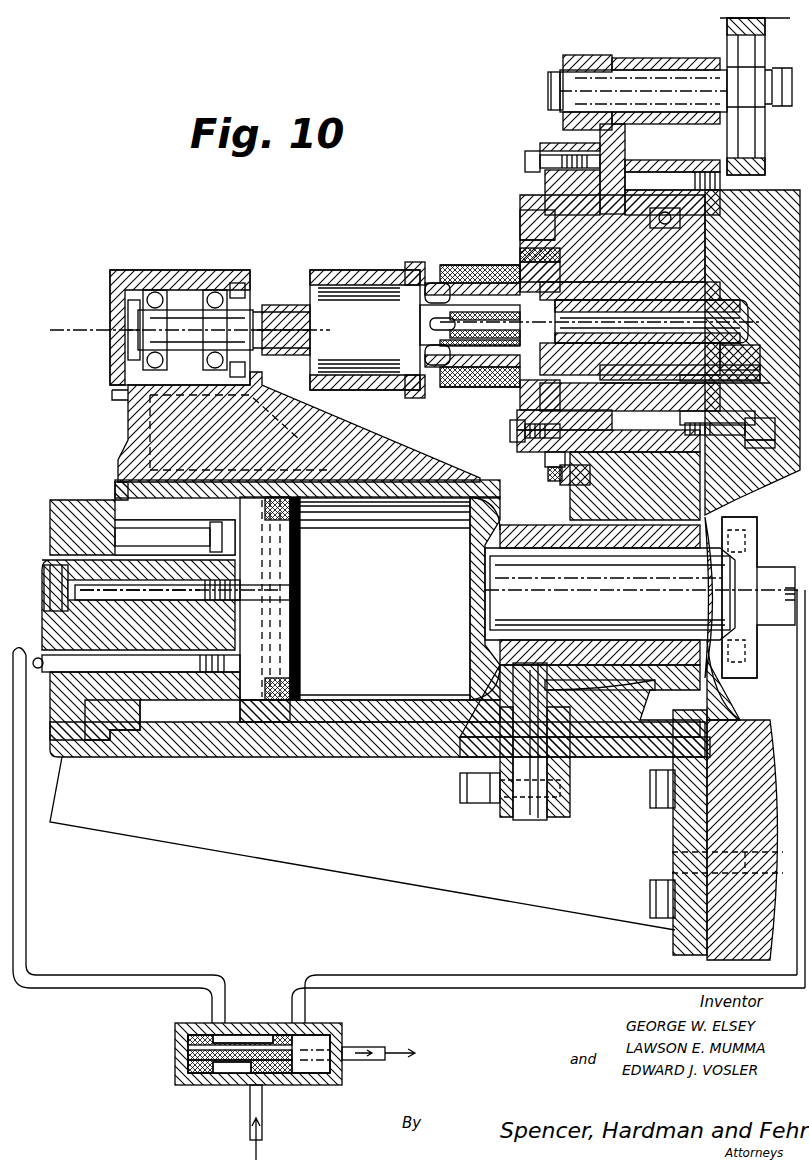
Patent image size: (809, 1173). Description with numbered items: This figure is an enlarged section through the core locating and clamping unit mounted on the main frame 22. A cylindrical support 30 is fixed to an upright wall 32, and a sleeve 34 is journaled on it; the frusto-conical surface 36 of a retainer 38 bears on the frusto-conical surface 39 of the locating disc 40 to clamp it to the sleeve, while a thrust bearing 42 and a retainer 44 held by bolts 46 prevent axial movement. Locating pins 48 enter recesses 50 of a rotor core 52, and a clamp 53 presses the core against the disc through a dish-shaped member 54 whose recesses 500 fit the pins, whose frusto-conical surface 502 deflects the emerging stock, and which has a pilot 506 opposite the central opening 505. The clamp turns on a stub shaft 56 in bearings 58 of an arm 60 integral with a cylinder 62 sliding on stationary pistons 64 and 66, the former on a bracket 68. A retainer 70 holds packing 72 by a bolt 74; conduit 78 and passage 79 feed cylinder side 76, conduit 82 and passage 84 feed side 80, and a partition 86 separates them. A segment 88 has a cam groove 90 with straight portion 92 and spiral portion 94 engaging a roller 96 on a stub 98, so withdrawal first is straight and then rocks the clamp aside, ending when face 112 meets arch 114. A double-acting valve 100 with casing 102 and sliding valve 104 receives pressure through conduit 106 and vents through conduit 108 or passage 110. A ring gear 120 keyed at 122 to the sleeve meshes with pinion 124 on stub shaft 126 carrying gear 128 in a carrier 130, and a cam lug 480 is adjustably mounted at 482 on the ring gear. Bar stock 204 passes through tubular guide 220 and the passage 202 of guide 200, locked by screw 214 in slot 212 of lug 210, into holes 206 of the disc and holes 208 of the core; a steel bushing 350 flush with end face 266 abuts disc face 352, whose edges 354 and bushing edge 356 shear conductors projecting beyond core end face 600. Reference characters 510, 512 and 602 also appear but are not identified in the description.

The main frame 22 is at (712, 947).
The cylindrical support 30 is at (700, 290).
The upright wall 32 is at (760, 485).
The sleeve 34 is at (520, 219).
The frusto-conical surface 36 is at (510, 427).
The retainer 38 is at (517, 454).
The frusto-conical surface 39 is at (517, 410).
The locating disc 40 is at (520, 240).
The thrust bearing 42 is at (680, 216).
The retainer 44 is at (630, 124).
The bolts 46 is at (652, 172).
The locating pins 48 is at (440, 283).
The longitudinal recess 50 is at (458, 265).
The rotor core 52 is at (472, 395).
The clamp 53 is at (358, 272).
The dish-shaped member 54 is at (420, 392).
The stub shaft 56 is at (185, 310).
The combined thrust and journal bearings 58 is at (150, 292).
The extending arm 60 is at (130, 412).
The cylinder 62 is at (400, 440).
The stationary piston 64 is at (118, 490).
The stationary piston 66 is at (532, 560).
The bracket 68 is at (217, 757).
The retainer 70 is at (298, 594).
The packing 72 is at (290, 520).
The bolt 74 is at (68, 598).
The cylinder side 76 is at (345, 722).
The conduit 78 is at (142, 672).
The passage 79 is at (290, 690).
The cylinder side 80 is at (470, 628).
The conduit 82 is at (800, 685).
The passage 84 is at (577, 588).
The partition 86 is at (480, 598).
The segment 88 is at (672, 690).
The cam groove 90 is at (609, 690).
The straight portion 92 is at (583, 690).
The spiral portion 94 is at (630, 684).
The roller 96 is at (560, 686).
The stub 98 is at (520, 820).
The double-acting valve 100 is at (255, 1023).
The casing 102 is at (330, 1030).
The sliding valve 104 is at (190, 1045).
The conduit 106 is at (262, 1115).
The conduit 108 is at (380, 1045).
The longitudinal passage 110 is at (200, 1060).
The face 112 is at (240, 712).
The arch 114 is at (110, 710).
The ring gear 120 is at (566, 142).
The key 122 is at (548, 470).
The pinion 124 is at (608, 44).
The stub shaft 126 is at (718, 62).
The gear 128 is at (727, 30).
The carrier 130 is at (640, 108).
The guide 200 is at (725, 352).
The longitudinal passage 202 is at (720, 393).
The bar stock 204 is at (765, 383).
The holes 206 is at (535, 263).
The holes 208 is at (462, 265).
The lateral lug 210 is at (730, 411).
The slot 212 is at (730, 438).
The screw 214 is at (775, 428).
The tubular guide 220 is at (760, 375).
The end face 266 is at (600, 322).
The steel bushing 350 is at (566, 355).
The end face 352 is at (520, 260).
The circular edges 354 is at (520, 346).
The circular edge 356 is at (585, 396).
The cam lug 480 is at (542, 146).
The adjustable mounting 482 is at (525, 161).
The recesses 500 is at (432, 283).
The frusto-conical surface 502 is at (418, 262).
The central opening 505 is at (455, 345).
The pilot 506 is at (428, 330).
The housing wall 510 is at (548, 290).
The spindle 512 is at (748, 300).
The core end face 600 is at (420, 318).
The bore 602 is at (575, 325).